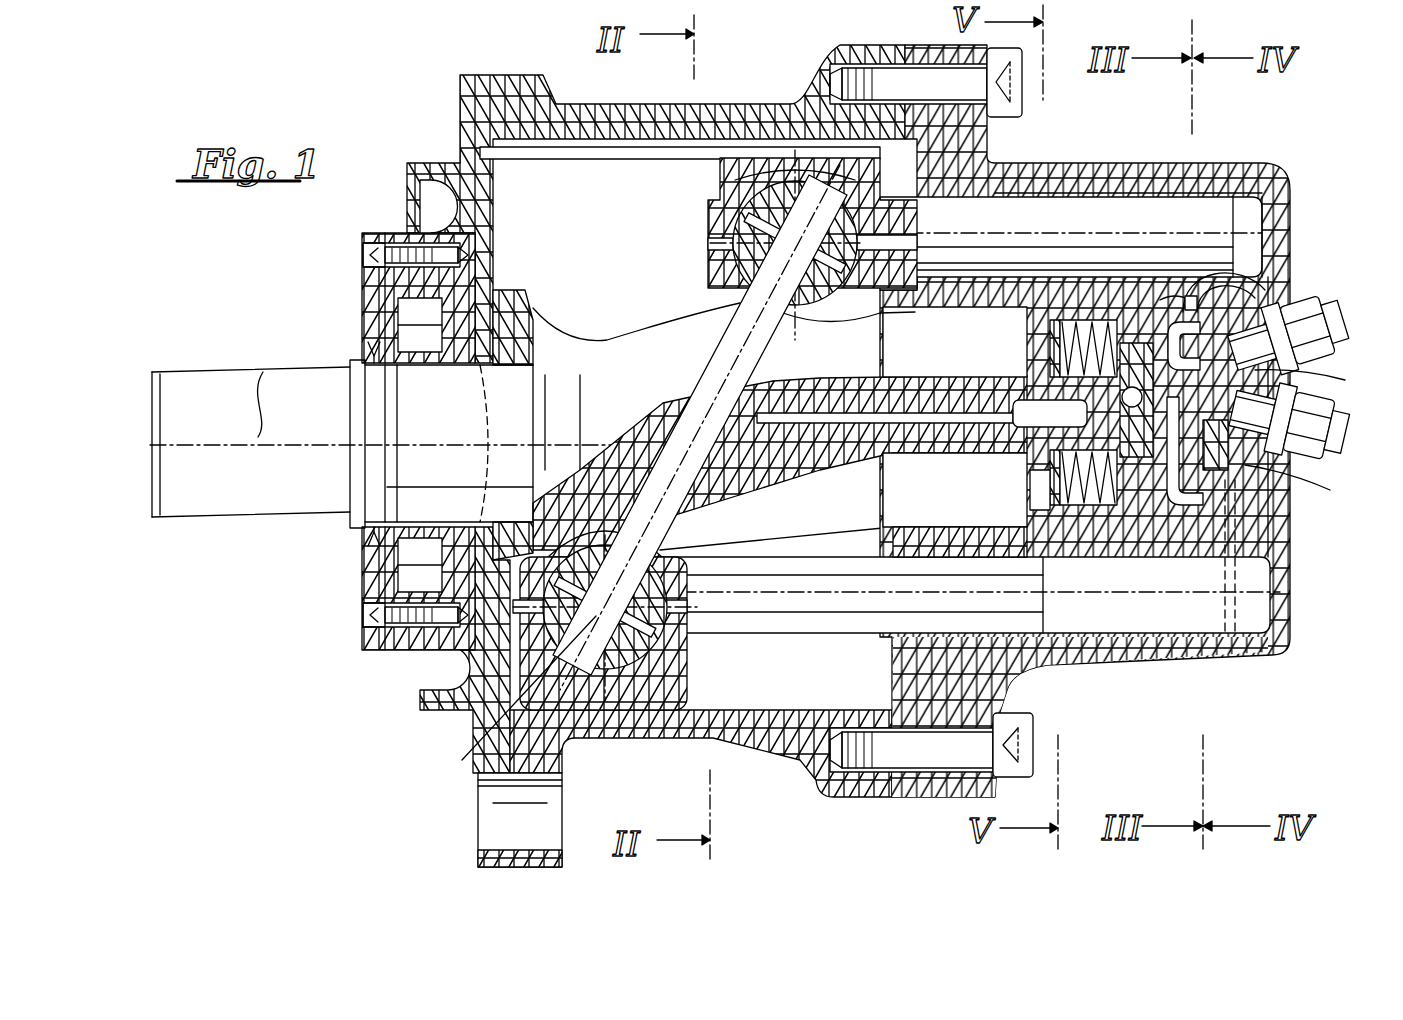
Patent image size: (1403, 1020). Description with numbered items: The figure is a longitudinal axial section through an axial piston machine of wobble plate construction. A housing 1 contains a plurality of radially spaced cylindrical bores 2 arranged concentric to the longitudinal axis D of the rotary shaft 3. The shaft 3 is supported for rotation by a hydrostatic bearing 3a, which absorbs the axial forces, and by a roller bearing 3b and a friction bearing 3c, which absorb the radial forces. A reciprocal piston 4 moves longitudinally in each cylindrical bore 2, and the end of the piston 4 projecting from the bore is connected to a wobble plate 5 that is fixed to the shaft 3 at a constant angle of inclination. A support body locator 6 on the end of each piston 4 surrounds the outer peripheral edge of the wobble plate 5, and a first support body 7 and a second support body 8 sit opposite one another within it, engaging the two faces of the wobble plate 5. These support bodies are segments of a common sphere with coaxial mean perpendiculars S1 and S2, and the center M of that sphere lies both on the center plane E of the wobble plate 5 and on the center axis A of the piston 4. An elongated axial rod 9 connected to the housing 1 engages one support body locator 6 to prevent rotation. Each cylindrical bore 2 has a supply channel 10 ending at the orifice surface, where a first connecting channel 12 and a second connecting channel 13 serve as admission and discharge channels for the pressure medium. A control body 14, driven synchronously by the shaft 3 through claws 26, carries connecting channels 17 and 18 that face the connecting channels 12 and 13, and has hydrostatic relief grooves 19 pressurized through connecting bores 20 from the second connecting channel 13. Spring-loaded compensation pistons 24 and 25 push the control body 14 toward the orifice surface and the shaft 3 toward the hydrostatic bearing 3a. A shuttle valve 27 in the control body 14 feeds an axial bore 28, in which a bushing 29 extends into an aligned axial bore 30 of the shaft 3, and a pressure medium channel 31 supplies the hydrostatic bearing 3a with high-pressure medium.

The housing 1 is at (1088, 176).
The cylindrical bore 2 is at (1257, 190).
The rotary shaft 3 is at (614, 373).
The hydrostatic bearing 3a is at (527, 300).
The roller bearing 3b is at (397, 290).
The friction bearing 3c is at (912, 525).
The piston 4 is at (1130, 205).
The wobble plate 5 is at (767, 293).
The support body locator 6 is at (653, 690).
The first support body 7 is at (623, 625).
The second support body 8 is at (473, 712).
The axial rod 9 is at (573, 160).
The supply channel 10 is at (1240, 286).
The first connecting channel 12 is at (1243, 337).
The second connecting channel 13 is at (1247, 413).
The control body 14 is at (1175, 300).
The connecting channel 17 is at (1190, 308).
The connecting channel 18 is at (1188, 470).
The hydrostatic relief groove 19 is at (1290, 385).
The connecting bore 20 is at (1258, 470).
The compensation piston 24 is at (1060, 318).
The compensation piston 25 is at (1080, 492).
The claw 26 is at (1040, 505).
The shuttle valve 27 is at (1134, 398).
The axial bore 28 is at (1050, 447).
The bushing 29 is at (1045, 385).
The axial bore 30 is at (1013, 428).
The pressure medium channel 31 is at (918, 412).
The center axis of the piston A is at (697, 250).
The longitudinal axis of the shaft D is at (263, 372).
The center plane of the wobble plate E is at (468, 755).
The center of the sphere M is at (643, 647).
The mean perpendicular S1 is at (830, 292).
The mean perpendicular S2 is at (747, 213).